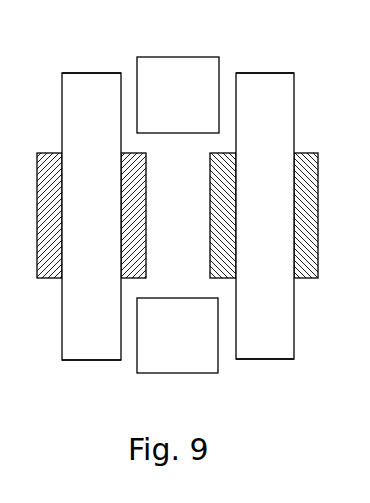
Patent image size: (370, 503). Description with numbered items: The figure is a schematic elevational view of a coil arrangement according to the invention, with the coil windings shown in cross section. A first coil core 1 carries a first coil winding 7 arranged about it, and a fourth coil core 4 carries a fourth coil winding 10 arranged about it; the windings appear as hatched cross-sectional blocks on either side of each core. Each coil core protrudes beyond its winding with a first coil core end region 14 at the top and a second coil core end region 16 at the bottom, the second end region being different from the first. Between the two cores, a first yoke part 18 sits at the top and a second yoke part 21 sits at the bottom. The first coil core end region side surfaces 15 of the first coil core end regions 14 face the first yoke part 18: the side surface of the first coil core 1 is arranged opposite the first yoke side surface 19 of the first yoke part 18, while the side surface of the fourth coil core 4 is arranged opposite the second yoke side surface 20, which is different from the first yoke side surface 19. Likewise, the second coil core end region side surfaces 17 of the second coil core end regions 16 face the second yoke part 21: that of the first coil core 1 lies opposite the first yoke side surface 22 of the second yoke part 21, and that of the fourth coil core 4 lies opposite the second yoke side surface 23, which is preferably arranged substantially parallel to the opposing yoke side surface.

The first coil core 1 is at (91, 216).
The fourth coil core 4 is at (265, 216).
The first coil winding 7 is at (42, 162).
The fourth coil winding 10 is at (208, 227).
The first coil core end region 14 is at (83, 102).
The first coil core end region side surface 15 is at (124, 120).
The second coil core end region 16 is at (75, 345).
The second coil core end region side surface 17 is at (233, 306).
The first yoke part 18 is at (178, 95).
The first yoke side surface of the first yoke part 19 is at (135, 56).
The second yoke side surface of the first yoke part 20 is at (222, 60).
The second yoke part 21 is at (177, 335).
The first yoke side surface of the second yoke part 22 is at (133, 362).
The second yoke side surface of the second yoke part 23 is at (221, 370).